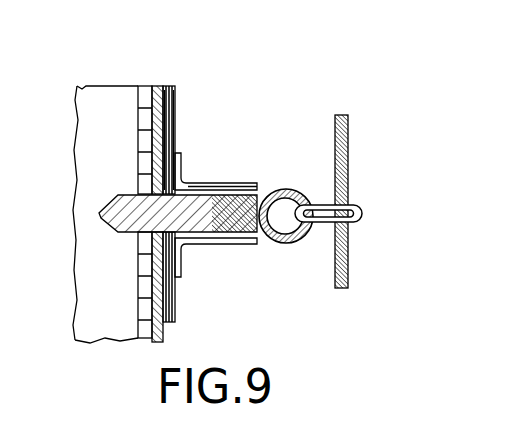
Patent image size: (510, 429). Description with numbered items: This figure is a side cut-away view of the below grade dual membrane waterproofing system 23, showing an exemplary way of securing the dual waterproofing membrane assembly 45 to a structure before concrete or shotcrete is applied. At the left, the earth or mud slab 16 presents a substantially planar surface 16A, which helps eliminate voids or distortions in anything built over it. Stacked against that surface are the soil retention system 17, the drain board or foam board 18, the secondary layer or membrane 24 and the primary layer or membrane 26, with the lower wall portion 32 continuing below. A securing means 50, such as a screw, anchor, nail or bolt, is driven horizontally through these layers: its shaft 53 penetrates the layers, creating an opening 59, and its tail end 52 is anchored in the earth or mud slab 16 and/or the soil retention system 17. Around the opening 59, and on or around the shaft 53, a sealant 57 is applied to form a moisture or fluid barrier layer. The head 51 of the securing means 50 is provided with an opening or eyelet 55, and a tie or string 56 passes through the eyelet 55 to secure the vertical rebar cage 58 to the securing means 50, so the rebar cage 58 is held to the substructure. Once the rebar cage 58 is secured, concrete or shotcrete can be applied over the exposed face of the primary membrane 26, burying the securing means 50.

The earth or mud slab 16 is at (84, 100).
The substantially planar surface 16A is at (140, 98).
The soil retention system 17 is at (147, 84).
The drain board or foam board 18 is at (165, 84).
The secondary layer or membrane 24 is at (171, 102).
The primary layer or membrane 26 is at (175, 112).
The dual waterproofing membrane assembly 45 is at (176, 132).
The opening 59 is at (140, 185).
The lower wall portion 32 is at (162, 332).
The tail end 52 is at (104, 228).
The sealant 57 is at (183, 163).
The shaft 53 is at (205, 186).
The securing means 50 is at (280, 187).
The head 51 is at (298, 189).
The eyelet 55 is at (302, 242).
The rebar cage 58 is at (349, 146).
The tie or string 56 is at (363, 208).
The below grade dual membrane waterproofing system 23 is at (291, 59).